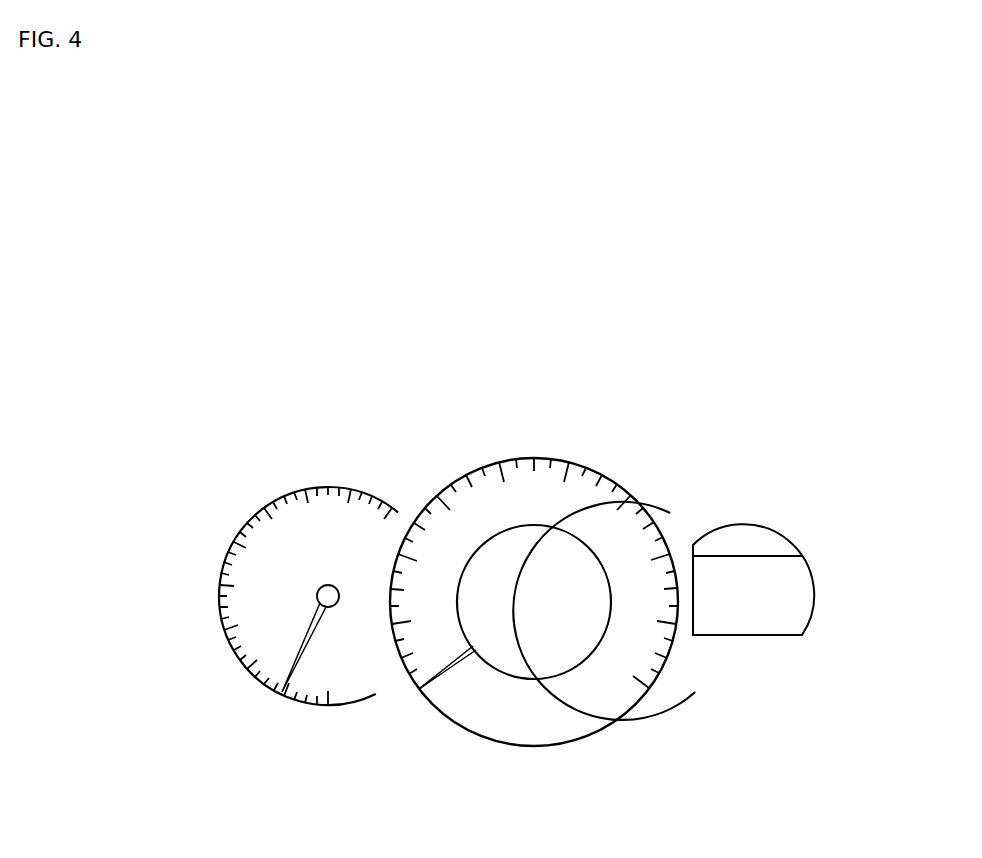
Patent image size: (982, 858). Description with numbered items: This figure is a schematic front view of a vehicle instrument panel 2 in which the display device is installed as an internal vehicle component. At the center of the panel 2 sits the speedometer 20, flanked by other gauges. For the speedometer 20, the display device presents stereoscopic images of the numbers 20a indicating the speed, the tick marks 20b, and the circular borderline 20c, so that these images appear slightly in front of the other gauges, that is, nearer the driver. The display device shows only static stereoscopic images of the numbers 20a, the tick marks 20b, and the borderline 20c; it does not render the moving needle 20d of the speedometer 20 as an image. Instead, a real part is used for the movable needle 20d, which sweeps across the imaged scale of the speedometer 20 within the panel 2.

The instrument panel 2 is at (834, 354).
The speedometer 20 is at (653, 357).
The numbers 20a is at (468, 512).
The tick marks 20b is at (527, 460).
The circular borderline 20c is at (580, 457).
The needle 20d is at (466, 655).